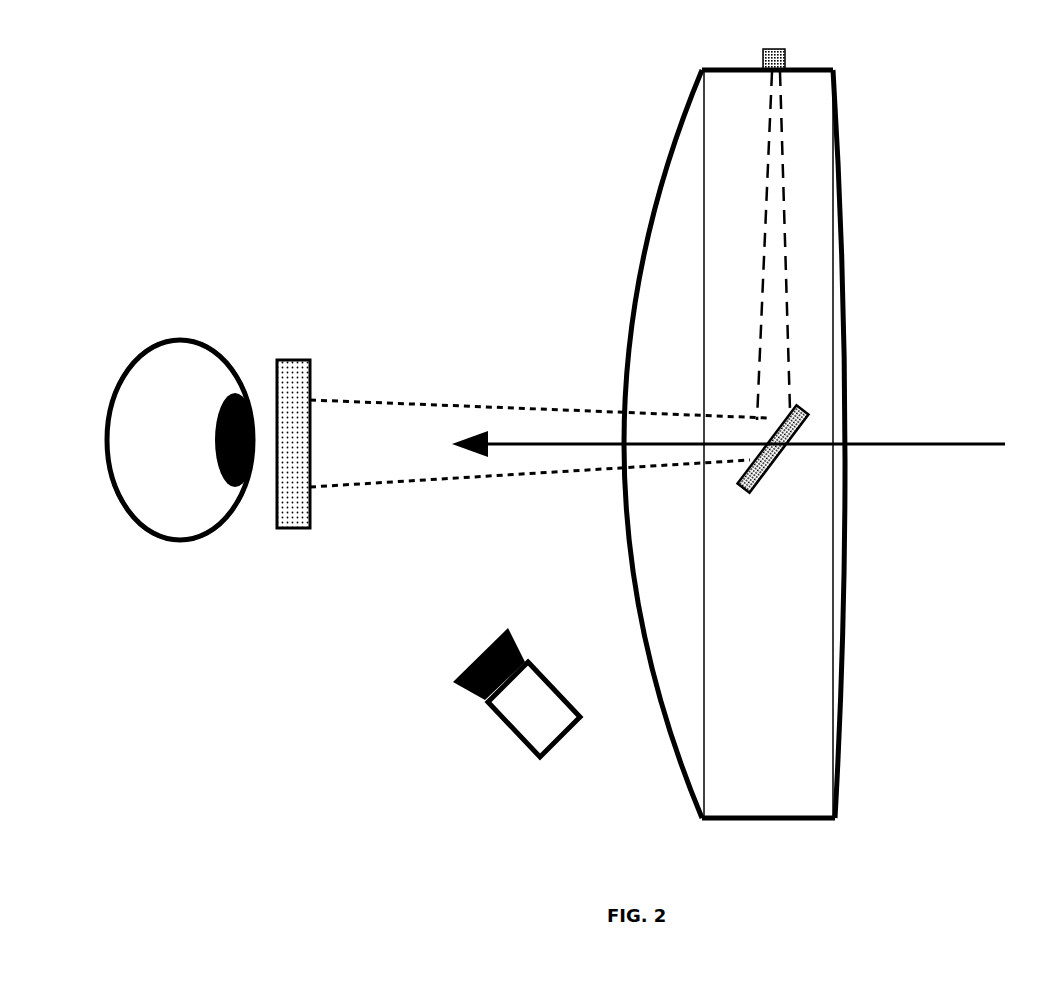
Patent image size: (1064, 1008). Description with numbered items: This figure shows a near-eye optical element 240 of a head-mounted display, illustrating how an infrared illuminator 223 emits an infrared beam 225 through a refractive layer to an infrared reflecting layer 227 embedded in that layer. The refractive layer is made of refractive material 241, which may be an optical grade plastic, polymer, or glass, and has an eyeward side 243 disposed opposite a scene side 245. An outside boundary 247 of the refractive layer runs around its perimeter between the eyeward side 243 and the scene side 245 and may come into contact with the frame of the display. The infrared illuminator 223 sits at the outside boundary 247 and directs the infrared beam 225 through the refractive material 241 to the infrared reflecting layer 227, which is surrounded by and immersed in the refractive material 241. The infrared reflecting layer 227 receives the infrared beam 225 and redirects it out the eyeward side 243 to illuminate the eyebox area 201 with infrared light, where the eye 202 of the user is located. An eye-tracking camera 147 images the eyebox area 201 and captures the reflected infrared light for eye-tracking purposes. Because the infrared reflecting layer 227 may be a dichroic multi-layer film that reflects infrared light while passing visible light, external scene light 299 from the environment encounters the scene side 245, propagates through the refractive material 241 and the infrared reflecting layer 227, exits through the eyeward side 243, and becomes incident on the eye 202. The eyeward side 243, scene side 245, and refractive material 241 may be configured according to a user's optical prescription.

The eye-tracking camera 147 is at (550, 680).
The eyebox area 201 is at (299, 360).
The eye 202 is at (153, 333).
The infrared illuminator 223 is at (773, 49).
The infrared beam 225 is at (460, 408).
The infrared reflecting layer 227 is at (765, 490).
The near-eye optical element 240 is at (759, 442).
The refractive material 241 is at (721, 379).
The eyeward side 243 is at (658, 144).
The scene side 245 is at (856, 262).
The outside boundary 247 is at (716, 60).
The external scene light 299 is at (754, 444).